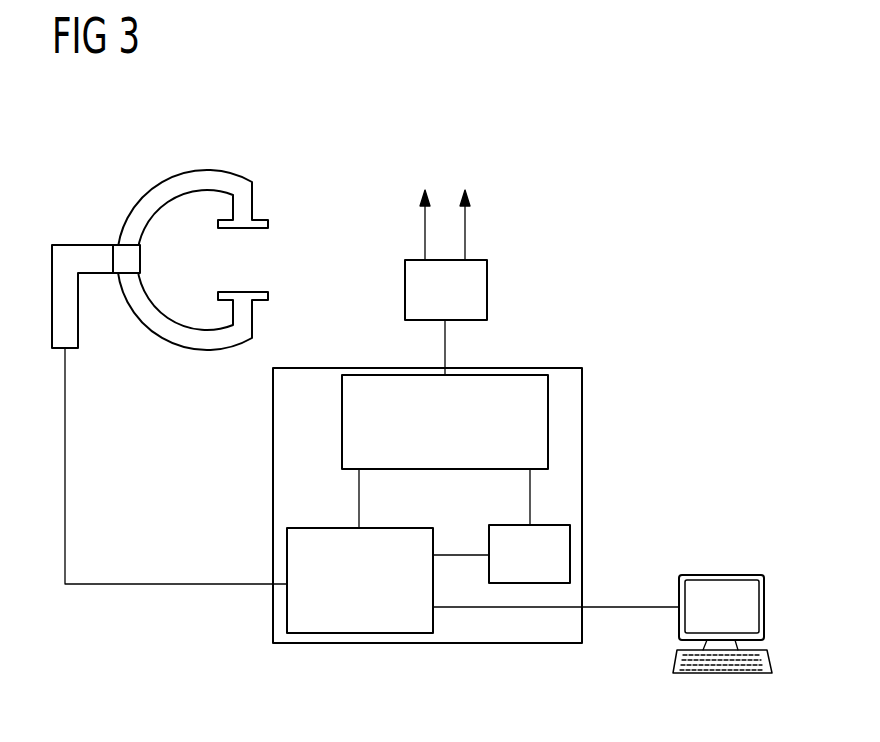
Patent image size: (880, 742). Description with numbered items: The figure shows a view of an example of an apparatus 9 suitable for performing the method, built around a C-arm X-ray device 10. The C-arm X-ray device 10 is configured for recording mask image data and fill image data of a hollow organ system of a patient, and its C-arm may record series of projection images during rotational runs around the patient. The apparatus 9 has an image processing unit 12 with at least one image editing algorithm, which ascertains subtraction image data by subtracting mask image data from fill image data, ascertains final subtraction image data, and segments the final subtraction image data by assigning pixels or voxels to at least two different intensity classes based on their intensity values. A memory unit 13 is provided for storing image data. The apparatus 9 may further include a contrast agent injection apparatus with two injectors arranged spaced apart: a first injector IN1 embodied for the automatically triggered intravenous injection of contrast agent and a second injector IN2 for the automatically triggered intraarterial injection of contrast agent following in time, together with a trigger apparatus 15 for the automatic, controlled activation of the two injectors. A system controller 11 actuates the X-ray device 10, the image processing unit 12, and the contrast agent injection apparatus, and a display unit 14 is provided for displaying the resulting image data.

The apparatus 9 is at (517, 645).
The C-arm X-ray device 10 is at (199, 170).
The system controller 11 is at (550, 422).
The image processing unit 12 is at (362, 634).
The memory unit 13 is at (572, 556).
The display unit 14 is at (720, 575).
The trigger apparatus 15 is at (403, 290).
The first injector IN1 is at (423, 232).
The second injector IN2 is at (468, 229).